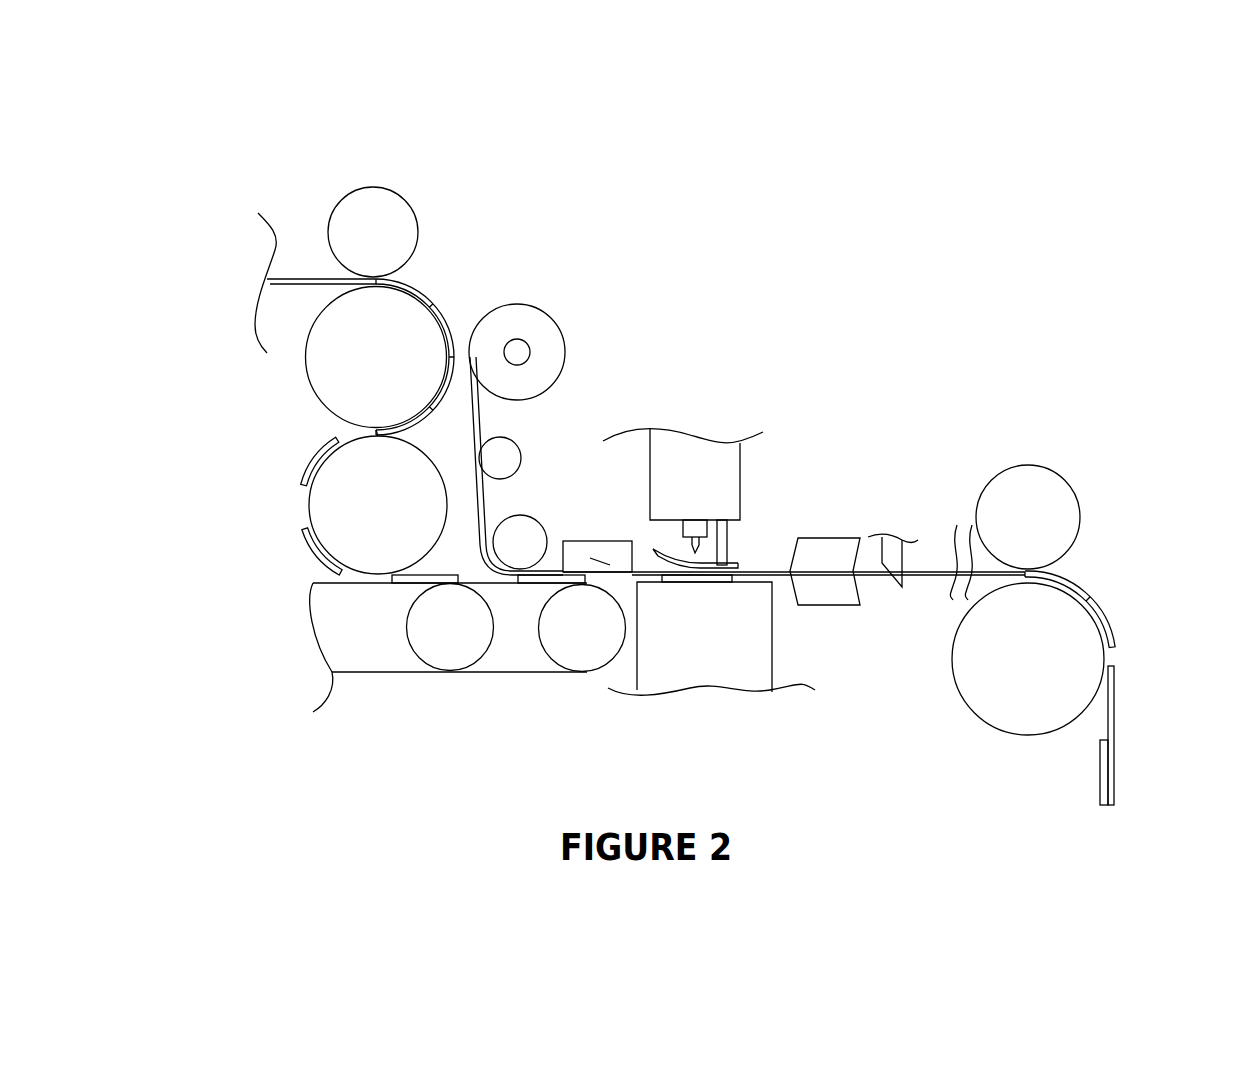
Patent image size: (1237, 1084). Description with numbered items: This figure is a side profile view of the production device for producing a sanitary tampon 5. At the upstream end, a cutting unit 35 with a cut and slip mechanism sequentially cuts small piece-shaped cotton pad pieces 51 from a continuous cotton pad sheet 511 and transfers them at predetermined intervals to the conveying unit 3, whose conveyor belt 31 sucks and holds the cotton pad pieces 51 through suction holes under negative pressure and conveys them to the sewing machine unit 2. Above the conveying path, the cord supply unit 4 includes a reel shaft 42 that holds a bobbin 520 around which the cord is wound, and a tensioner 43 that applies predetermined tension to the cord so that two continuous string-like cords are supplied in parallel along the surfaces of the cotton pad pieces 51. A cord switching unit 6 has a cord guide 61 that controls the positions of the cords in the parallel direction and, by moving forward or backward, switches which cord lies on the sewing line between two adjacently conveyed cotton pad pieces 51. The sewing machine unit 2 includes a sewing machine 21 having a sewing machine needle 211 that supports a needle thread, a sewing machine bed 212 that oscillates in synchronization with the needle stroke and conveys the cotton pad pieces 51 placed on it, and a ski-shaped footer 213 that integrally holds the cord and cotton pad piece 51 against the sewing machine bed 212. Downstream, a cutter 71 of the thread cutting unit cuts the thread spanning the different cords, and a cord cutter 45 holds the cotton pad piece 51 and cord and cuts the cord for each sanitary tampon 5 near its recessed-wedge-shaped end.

The sewing machine unit 2 is at (737, 482).
The sewing machine 21 is at (665, 425).
The sewing machine needle 211 is at (742, 578).
The sewing machine bed 212 is at (728, 560).
The footer 213 is at (662, 553).
The conveying unit 3 is at (468, 683).
The conveyor belt 31 is at (352, 583).
The cutting unit 35 is at (447, 255).
The cord supply unit 4 is at (747, 384).
The reel shaft 42 is at (574, 296).
The tensioner 43 is at (496, 457).
The cord cutter 45 is at (1062, 470).
The sanitary tampon 5 is at (1118, 771).
The cotton pad piece 51 is at (318, 553).
The cotton pad sheet 511 is at (297, 283).
The bobbin 520 is at (513, 315).
The cord switching unit 6 is at (587, 535).
The cord guide 61 is at (592, 560).
The cutter 71 is at (893, 558).